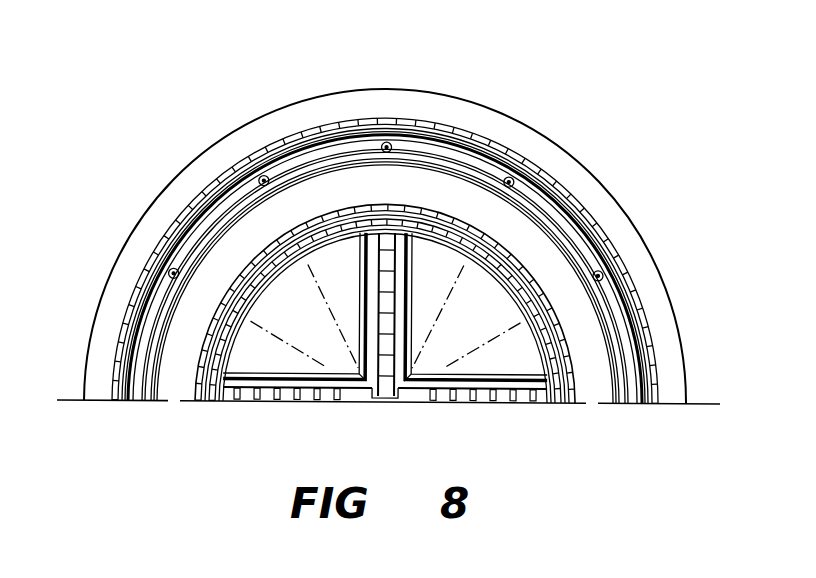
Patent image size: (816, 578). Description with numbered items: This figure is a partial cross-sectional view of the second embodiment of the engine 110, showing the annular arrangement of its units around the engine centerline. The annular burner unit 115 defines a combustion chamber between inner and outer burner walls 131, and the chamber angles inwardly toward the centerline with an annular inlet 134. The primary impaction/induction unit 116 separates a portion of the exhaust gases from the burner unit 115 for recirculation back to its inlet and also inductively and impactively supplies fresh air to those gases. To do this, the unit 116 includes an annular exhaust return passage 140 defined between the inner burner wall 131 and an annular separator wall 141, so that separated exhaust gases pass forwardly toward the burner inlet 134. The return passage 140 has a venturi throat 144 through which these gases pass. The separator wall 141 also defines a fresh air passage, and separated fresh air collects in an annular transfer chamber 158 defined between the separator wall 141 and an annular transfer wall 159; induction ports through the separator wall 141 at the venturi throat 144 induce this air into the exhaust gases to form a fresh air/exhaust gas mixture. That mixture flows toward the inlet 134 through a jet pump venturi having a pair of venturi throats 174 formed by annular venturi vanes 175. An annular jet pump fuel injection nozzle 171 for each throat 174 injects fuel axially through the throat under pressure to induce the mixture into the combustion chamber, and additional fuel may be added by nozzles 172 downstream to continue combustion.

The engine 110 is at (387, 78).
The annular burner unit 115 is at (518, 152).
The primary impaction/induction unit 116 is at (258, 405).
The burner walls 131 is at (595, 223).
The annular inlet 134 is at (610, 267).
The annular exhaust return passage 140 is at (555, 327).
The annular separator wall 141 is at (562, 383).
The venturi throat 144 is at (508, 268).
The annular transfer chamber 158 is at (502, 270).
The annular transfer wall 159 is at (515, 300).
The annular jet pump fuel injection nozzle 171 is at (552, 198).
The nozzles 172 is at (254, 175).
The venturi throats 174 is at (440, 137).
The annular venturi vanes 175 is at (213, 220).